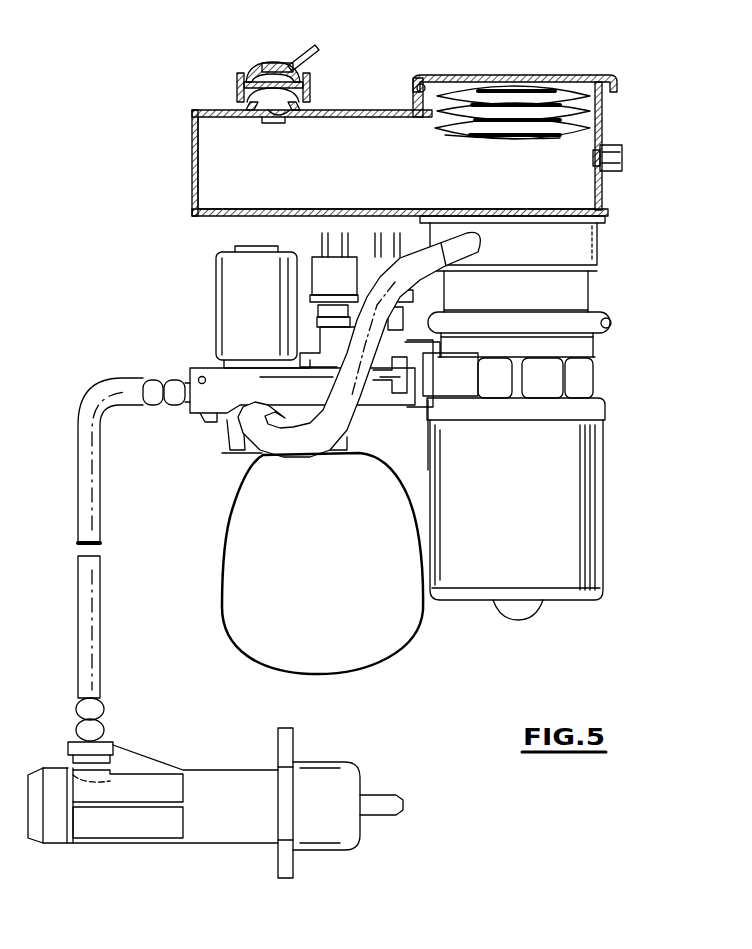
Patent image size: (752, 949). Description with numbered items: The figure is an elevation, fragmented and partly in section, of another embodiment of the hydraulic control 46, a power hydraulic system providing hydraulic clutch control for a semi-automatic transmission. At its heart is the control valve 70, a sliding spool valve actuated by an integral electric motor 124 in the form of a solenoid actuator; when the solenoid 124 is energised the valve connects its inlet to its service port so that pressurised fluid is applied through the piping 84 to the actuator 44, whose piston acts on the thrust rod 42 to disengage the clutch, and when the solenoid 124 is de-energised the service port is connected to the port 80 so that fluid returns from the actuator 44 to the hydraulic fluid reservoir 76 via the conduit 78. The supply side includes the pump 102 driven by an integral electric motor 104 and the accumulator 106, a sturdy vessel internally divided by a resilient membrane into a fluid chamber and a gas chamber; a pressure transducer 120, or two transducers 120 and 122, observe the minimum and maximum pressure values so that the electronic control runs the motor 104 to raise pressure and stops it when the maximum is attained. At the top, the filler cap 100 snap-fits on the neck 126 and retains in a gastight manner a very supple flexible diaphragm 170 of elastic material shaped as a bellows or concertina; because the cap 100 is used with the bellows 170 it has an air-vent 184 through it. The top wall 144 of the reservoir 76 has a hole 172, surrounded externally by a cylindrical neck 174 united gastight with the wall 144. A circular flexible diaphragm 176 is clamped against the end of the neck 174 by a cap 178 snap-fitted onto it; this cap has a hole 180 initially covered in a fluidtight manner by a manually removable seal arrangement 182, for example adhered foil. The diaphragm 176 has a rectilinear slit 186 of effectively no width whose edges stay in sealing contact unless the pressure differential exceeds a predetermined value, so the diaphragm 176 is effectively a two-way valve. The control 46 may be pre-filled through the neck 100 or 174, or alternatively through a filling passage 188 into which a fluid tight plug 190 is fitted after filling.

The thrust rod 42 is at (392, 794).
The actuator 44 is at (228, 749).
The hydraulic control 46 is at (100, 372).
The control valve 70 is at (206, 410).
The hydraulic fluid reservoir 76 is at (192, 140).
The conduit 78 is at (322, 452).
The port 80 is at (232, 448).
The piping 84 is at (78, 478).
The filler cap 100 is at (606, 78).
The pump 102 is at (588, 348).
The electric motor 104 is at (578, 480).
The accumulator 106 is at (228, 530).
The pressure transducer 120 is at (383, 365).
The pressure transducer 122 is at (318, 340).
The electric motor (solenoid actuator) 124 is at (216, 294).
The neck 126 is at (440, 94).
The top wall 144 is at (405, 104).
The flexible diaphragm 170 is at (479, 146).
The hole 172 is at (270, 118).
The cylindrical neck 174 is at (300, 108).
The flexible diaphragm 176 is at (300, 79).
The cap 178 is at (238, 86).
The hole 180 is at (281, 66).
The seal arrangement 182 is at (308, 60).
The air-vent 184 is at (514, 75).
The slit 186 is at (292, 112).
The filling passage 188 is at (608, 146).
The plug 190 is at (594, 160).